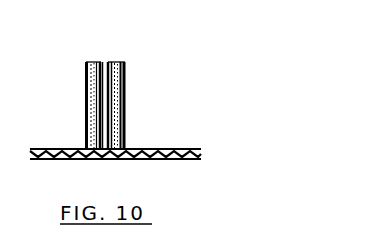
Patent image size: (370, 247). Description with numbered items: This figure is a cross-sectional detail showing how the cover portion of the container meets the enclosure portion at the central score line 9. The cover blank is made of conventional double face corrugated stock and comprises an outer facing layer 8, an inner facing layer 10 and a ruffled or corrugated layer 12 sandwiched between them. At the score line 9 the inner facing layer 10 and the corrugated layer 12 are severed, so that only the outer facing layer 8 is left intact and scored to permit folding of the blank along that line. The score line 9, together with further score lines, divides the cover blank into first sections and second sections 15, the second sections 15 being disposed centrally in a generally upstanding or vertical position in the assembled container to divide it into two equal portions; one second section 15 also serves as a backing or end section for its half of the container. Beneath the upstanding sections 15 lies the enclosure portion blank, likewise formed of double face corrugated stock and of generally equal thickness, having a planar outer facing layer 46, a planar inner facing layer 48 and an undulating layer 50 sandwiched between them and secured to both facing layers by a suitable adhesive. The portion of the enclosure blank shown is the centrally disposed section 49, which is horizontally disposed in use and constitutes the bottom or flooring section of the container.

The outer facing layer 8 is at (97, 83).
The score line 9 is at (109, 159).
The inner facing layer 10 is at (93, 79).
The corrugated layer 12 is at (110, 47).
The second sections 15 is at (87, 107).
The planar outer facing layer 46 is at (52, 160).
The planar inner facing layer 48 is at (52, 147).
The centrally disposed section 49 is at (146, 148).
The undulating layer 50 is at (201, 154).